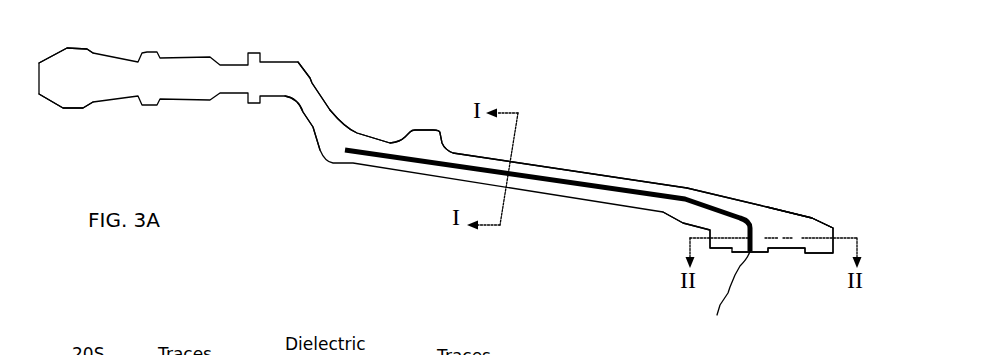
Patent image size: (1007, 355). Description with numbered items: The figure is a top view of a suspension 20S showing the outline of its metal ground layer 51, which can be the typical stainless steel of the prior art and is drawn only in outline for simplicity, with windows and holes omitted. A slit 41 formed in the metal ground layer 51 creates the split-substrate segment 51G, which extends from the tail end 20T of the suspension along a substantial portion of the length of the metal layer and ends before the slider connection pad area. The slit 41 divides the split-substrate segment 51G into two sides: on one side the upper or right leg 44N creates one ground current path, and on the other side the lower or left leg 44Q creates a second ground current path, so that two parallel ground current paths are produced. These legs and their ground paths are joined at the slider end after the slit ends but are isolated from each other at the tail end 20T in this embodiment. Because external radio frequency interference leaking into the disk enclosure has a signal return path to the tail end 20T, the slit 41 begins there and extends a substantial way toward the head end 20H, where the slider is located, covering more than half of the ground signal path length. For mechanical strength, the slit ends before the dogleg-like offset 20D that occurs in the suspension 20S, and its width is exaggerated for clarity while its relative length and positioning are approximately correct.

The suspension 20S is at (333, 59).
The head end 20H is at (60, 110).
The dogleg-like offset 20D is at (312, 127).
The tail end 20T is at (803, 258).
The metal ground layer 51 is at (330, 110).
The split-substrate segment 51G is at (587, 175).
The right leg 44N is at (782, 222).
The left leg 44Q is at (693, 218).
The slit 41 is at (726, 303).